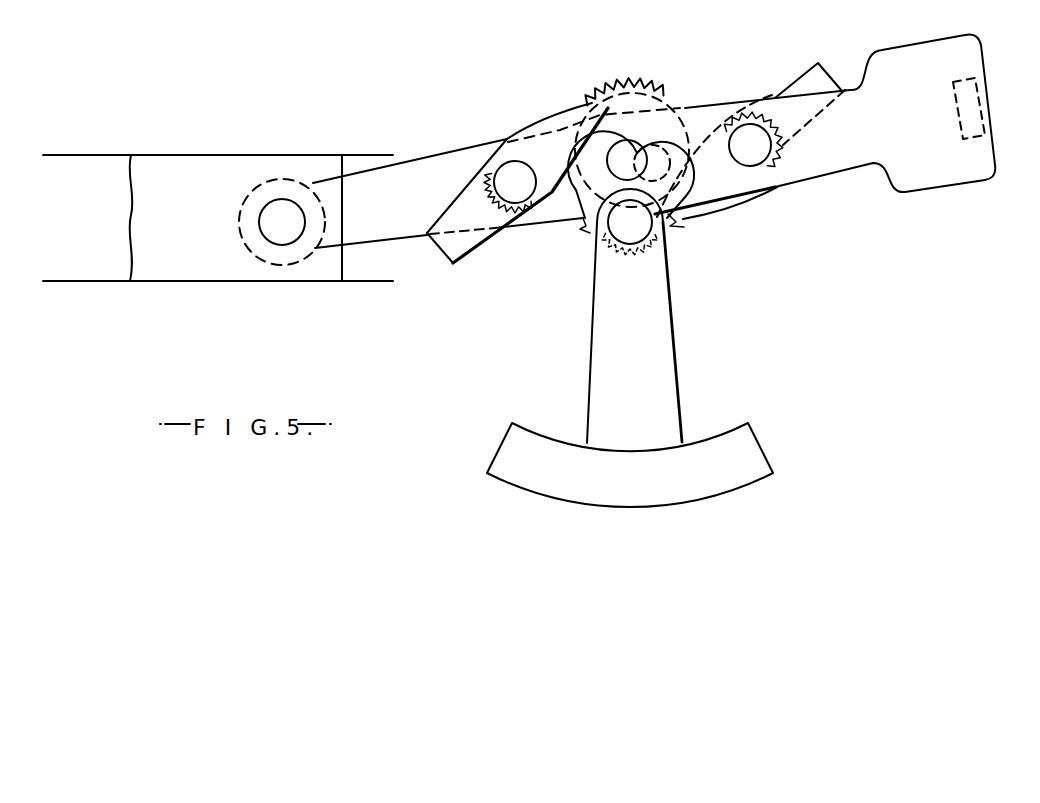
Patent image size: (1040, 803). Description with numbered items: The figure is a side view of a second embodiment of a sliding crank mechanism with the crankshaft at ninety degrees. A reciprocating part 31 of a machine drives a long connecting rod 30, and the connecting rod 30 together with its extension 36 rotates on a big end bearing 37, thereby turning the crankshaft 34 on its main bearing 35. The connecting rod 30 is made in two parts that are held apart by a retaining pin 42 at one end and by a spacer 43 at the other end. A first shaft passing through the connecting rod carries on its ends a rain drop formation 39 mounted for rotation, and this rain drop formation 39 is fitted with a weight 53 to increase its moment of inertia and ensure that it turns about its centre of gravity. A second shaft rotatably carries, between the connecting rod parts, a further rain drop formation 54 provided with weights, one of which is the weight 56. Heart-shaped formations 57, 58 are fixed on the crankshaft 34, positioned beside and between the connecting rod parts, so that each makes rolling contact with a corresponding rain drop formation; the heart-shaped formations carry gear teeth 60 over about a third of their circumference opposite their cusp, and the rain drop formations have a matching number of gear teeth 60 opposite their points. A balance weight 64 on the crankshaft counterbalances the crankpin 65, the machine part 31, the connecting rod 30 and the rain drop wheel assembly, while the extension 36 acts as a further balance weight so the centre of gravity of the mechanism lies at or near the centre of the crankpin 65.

The connecting rod 30 is at (405, 223).
The reciprocating part 31 is at (221, 255).
The crankshaft 34 is at (639, 226).
The main bearing 35 is at (600, 248).
The extension 36 is at (855, 148).
The big end bearing 37 is at (637, 170).
The rain drop formation 39 is at (547, 148).
The retaining pin 42 is at (292, 210).
The spacer 43 is at (955, 80).
The weight 53 is at (458, 247).
The further rain drop formation 54 is at (716, 211).
The weight 56 is at (819, 78).
The heart-shaped formation 57 is at (684, 218).
The heart-shaped formation 58 is at (627, 102).
The gear teeth 60 is at (483, 187).
The balance weight 64 is at (705, 467).
The crankpin 65 is at (632, 170).